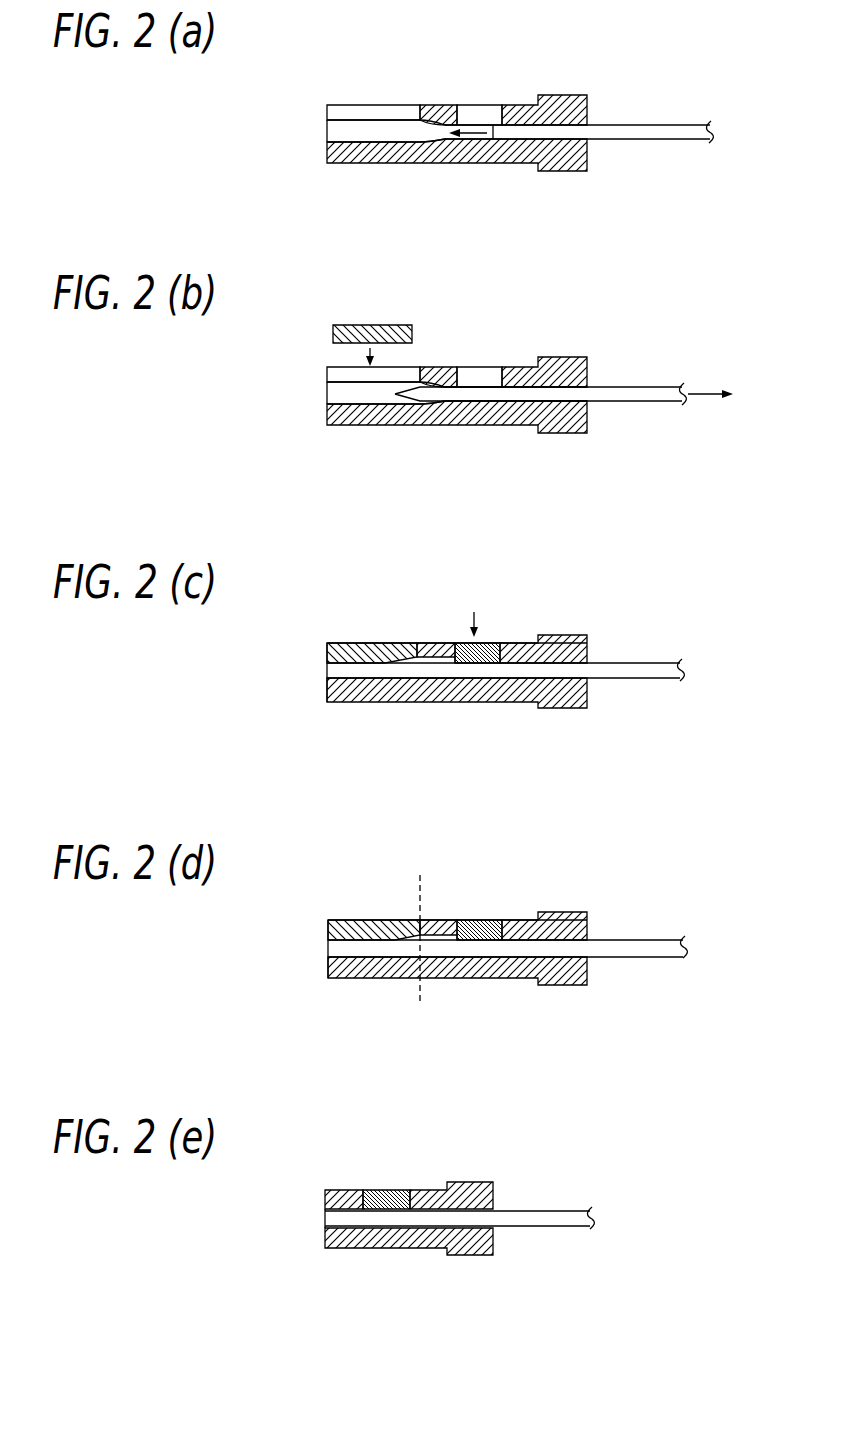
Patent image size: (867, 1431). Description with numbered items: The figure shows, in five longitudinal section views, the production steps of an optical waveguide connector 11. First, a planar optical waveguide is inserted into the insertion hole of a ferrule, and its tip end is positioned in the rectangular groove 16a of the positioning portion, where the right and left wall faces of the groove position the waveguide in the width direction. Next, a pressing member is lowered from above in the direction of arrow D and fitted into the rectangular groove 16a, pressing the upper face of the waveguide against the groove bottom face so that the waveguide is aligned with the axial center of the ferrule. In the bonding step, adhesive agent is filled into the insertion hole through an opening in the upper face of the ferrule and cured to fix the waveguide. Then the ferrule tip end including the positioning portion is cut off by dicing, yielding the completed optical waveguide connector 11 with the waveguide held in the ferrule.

The optical waveguide connector 11 is at (381, 1259).
The rectangular groove 16a is at (372, 131).
The arrow D is at (370, 348).